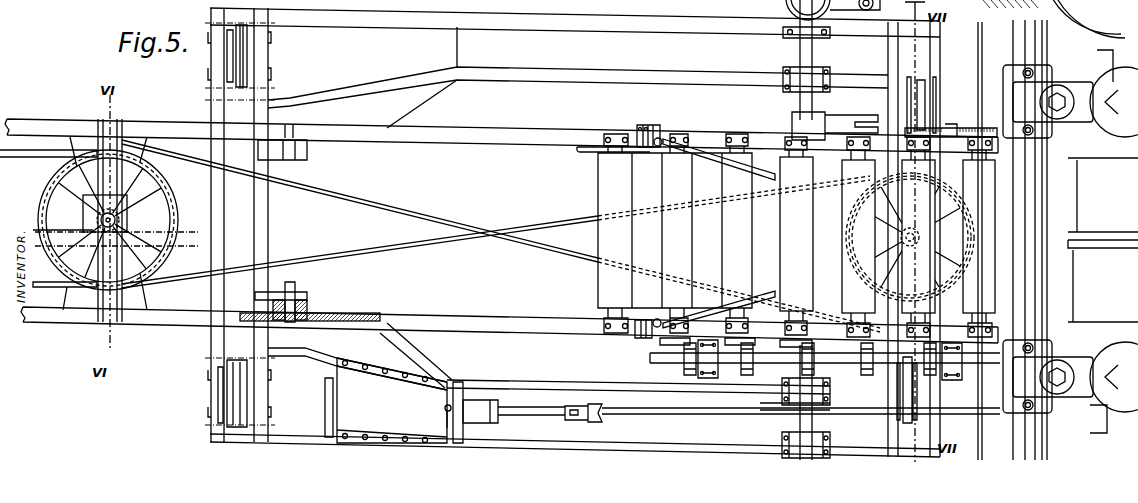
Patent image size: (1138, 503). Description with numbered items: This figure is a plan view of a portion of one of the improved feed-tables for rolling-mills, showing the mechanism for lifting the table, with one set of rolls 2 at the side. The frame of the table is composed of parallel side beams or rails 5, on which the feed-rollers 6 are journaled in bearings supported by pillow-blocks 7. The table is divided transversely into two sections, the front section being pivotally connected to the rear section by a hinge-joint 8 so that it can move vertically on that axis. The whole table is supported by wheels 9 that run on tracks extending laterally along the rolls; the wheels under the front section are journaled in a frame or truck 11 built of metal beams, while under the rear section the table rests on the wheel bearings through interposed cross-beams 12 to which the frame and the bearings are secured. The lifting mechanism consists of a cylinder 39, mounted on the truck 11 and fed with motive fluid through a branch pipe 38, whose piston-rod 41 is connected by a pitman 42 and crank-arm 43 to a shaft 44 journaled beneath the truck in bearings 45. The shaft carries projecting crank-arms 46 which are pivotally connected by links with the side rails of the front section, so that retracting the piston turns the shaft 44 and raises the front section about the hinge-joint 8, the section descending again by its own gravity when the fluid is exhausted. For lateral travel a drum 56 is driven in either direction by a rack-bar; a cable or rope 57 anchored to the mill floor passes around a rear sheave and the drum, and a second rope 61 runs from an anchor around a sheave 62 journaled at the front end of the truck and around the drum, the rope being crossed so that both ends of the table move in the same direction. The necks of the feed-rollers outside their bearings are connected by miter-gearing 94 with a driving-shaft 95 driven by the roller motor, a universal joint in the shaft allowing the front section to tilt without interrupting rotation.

The set of rolls 2 is at (1070, 230).
The side beams or rails 5 is at (551, 326).
The feed-rollers 6 is at (796, 240).
The pillow-blocks 7 is at (615, 132).
The hinge-joint 8 is at (288, 292).
The wheels 9 is at (250, 58).
The frame or truck 11 is at (583, 22).
The cross-beams 12 is at (210, 113).
The branch pipe 38 is at (445, 421).
The cylinder 39 is at (365, 383).
The piston-rod 41 is at (523, 404).
The pitman 42 is at (686, 408).
The crank-arm 43 is at (801, 414).
The shaft 44 is at (783, 10).
The bearings 45 is at (782, 68).
The projecting crank-arms 46 is at (845, 118).
The drum 56 is at (56, 188).
The cable or rope 57 is at (48, 160).
The second rope 61 is at (986, 432).
The sheave 62 is at (910, 245).
The miter-gearing 94 is at (882, 363).
The driving-shaft 95 is at (775, 366).